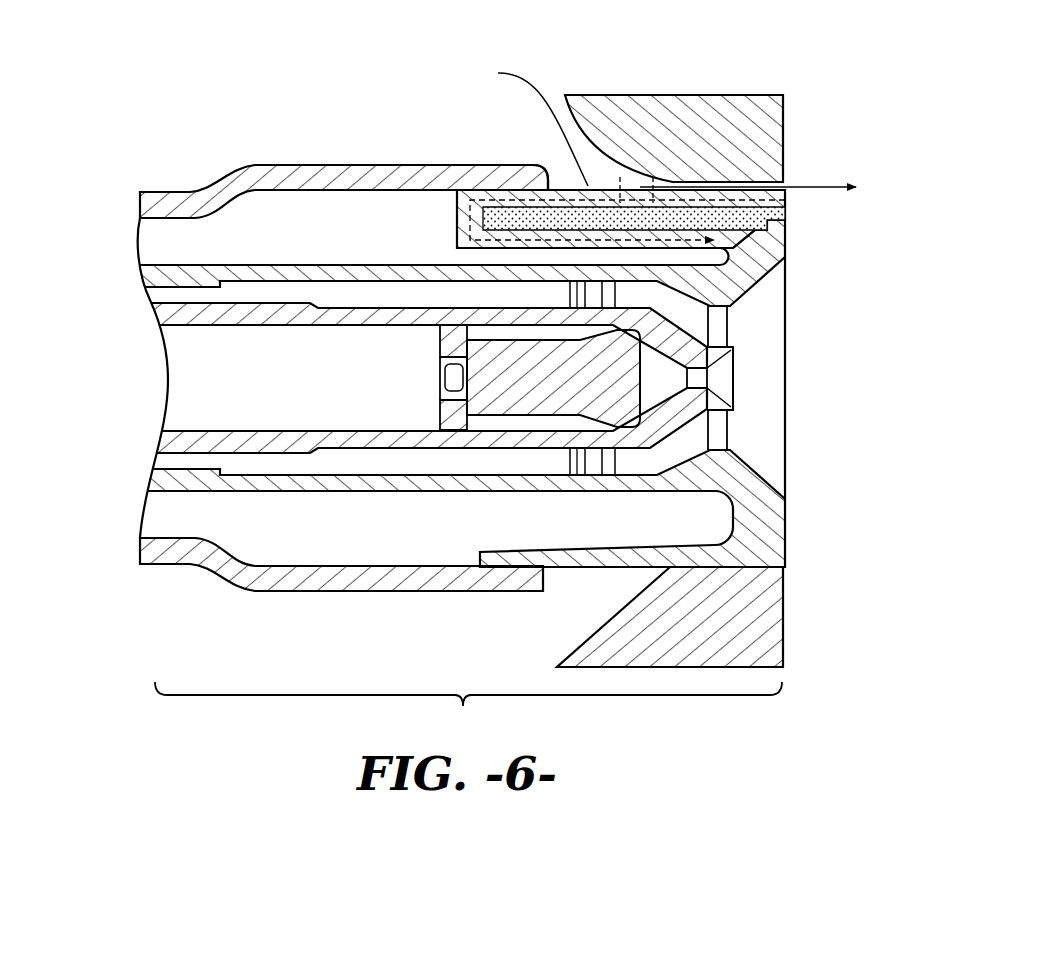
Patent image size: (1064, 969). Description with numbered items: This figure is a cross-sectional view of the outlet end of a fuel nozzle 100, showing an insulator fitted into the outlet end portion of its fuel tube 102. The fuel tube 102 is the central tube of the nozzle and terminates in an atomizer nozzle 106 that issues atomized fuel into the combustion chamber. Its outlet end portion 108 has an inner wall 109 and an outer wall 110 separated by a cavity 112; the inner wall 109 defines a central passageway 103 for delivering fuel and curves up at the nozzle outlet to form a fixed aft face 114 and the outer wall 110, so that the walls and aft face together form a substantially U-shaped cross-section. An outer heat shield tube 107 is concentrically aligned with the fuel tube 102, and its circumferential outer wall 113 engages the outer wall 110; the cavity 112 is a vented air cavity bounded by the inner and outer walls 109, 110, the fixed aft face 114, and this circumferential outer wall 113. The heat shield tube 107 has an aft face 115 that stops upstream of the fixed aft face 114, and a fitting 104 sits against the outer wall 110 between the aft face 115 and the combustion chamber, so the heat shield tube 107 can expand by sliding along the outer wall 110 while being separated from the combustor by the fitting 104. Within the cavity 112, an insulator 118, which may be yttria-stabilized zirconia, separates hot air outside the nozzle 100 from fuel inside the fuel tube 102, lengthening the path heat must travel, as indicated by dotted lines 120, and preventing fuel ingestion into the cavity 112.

The fuel nozzle 100 is at (199, 123).
The fuel tube 102 is at (190, 383).
The central passageway 103 is at (327, 392).
The fitting 104 is at (690, 94).
The atomizer nozzle 106 is at (710, 354).
The heat shield tube 107 is at (327, 163).
The outlet end portion 108 is at (468, 710).
The inner wall 109 is at (410, 272).
The outer wall 110 is at (454, 221).
The cavity 112 is at (302, 246).
The circumferential outer wall 113 is at (414, 164).
The fixed aft face 114 is at (788, 513).
The aft face 115 is at (548, 181).
The insulator 118 is at (742, 218).
The dotted lines 120 is at (568, 200).